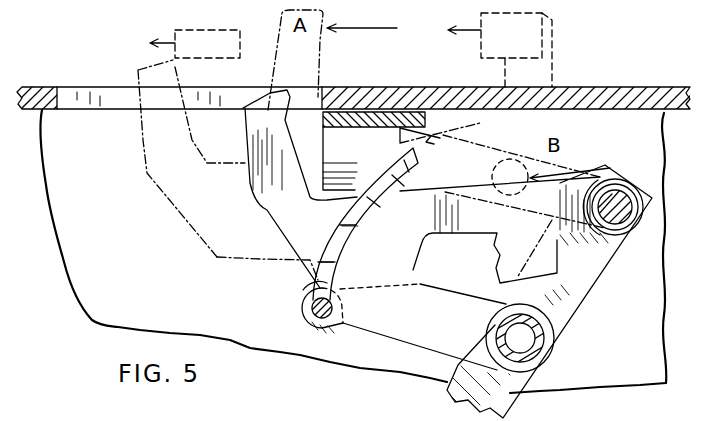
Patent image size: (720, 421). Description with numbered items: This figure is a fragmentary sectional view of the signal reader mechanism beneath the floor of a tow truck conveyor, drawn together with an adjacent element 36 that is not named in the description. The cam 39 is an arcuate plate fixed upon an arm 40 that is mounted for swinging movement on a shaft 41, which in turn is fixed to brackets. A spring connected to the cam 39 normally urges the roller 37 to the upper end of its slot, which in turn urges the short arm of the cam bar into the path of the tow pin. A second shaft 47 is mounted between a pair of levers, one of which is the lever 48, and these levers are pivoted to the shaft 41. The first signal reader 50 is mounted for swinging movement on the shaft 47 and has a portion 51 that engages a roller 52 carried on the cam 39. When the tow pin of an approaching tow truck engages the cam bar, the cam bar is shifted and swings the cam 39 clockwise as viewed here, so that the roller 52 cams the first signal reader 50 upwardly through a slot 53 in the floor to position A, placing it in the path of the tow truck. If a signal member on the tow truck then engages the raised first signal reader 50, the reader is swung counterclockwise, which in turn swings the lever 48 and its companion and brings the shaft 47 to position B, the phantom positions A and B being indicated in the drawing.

The stop block 36 is at (333, 162).
The roller 37 is at (402, 173).
The cam 39 is at (310, 280).
The arm 40 is at (407, 337).
The shaft 41 is at (530, 335).
The shaft 47 is at (622, 203).
The lever 48 is at (593, 273).
The first signal reader 50 is at (257, 214).
The portion of first signal reader 51 is at (282, 258).
The roller 52 is at (308, 322).
The slot 53 is at (325, 96).